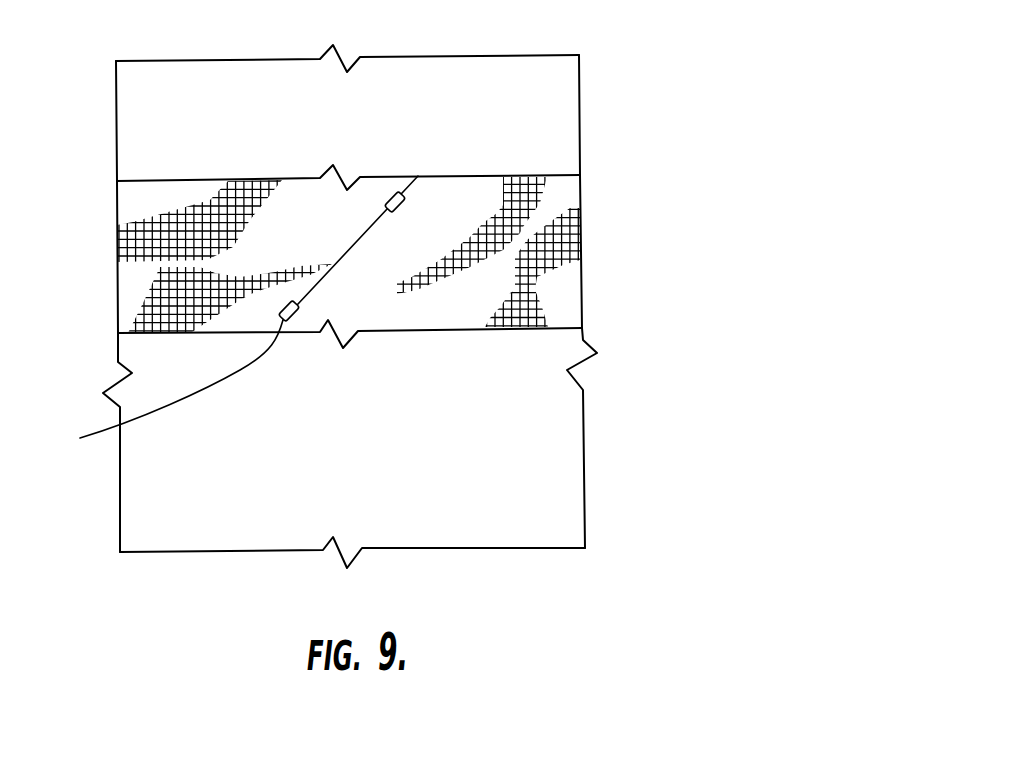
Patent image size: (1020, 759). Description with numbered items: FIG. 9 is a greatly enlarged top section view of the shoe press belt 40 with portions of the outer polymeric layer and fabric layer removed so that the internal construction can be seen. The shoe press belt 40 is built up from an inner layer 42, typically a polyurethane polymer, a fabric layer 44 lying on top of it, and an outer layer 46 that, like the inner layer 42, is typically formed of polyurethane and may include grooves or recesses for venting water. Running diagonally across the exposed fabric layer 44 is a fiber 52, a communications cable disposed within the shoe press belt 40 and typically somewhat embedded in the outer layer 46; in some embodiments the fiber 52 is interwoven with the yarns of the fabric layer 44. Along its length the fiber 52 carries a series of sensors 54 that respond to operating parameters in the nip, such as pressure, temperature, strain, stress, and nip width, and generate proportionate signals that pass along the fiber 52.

The shoe press belt 40 is at (380, 299).
The inner layer 42 is at (570, 417).
The fabric layer 44 is at (570, 270).
The outer layer 46 is at (570, 100).
The fiber 52 is at (300, 296).
The sensors 54 is at (391, 197).